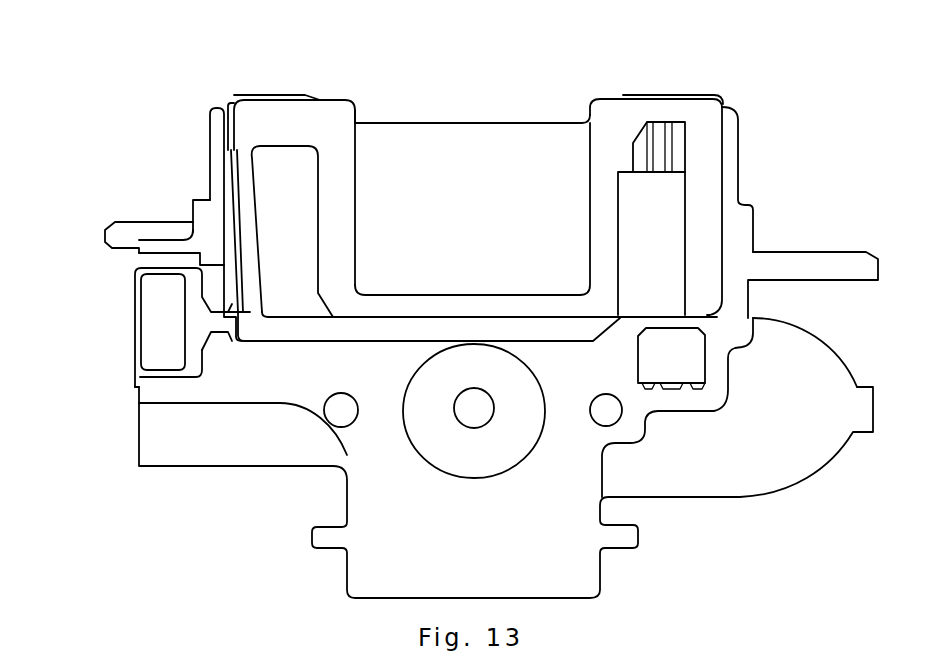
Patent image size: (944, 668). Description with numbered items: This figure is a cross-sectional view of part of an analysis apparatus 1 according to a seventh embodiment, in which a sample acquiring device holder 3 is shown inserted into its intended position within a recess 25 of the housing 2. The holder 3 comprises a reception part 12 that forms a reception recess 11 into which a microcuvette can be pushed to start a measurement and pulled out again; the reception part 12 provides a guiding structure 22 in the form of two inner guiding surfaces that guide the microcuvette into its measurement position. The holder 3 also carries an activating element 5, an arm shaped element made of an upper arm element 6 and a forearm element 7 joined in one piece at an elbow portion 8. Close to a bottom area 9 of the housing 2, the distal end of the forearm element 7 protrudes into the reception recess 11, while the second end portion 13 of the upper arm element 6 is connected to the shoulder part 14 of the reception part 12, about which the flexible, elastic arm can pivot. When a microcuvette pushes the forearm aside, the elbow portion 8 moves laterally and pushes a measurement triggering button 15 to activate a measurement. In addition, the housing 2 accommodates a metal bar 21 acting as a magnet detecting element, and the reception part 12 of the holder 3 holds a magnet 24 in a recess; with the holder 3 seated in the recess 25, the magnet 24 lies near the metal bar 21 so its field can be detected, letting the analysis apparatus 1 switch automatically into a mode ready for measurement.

The analysis apparatus 1 is at (116, 140).
The housing 2 is at (793, 270).
The sample acquiring device holder 3 is at (625, 66).
The activating element 5 is at (277, 231).
The upper arm element 6 is at (245, 180).
The forearm element 7 is at (343, 342).
The elbow portion 8 is at (253, 328).
The bottom area 9 is at (562, 327).
The reception recess 11 is at (403, 135).
The reception part 12 is at (655, 102).
The second end portion 13 is at (233, 150).
The shoulder part 14 is at (268, 110).
The button 15 is at (195, 323).
The metal bar 21 is at (682, 360).
The guiding structure 22 is at (358, 213).
The magnet 24 is at (645, 210).
The recess 25 is at (233, 242).